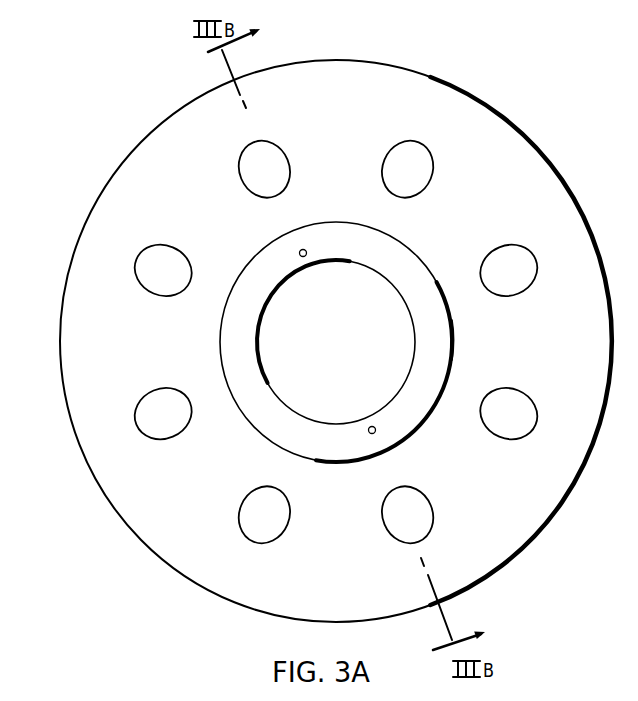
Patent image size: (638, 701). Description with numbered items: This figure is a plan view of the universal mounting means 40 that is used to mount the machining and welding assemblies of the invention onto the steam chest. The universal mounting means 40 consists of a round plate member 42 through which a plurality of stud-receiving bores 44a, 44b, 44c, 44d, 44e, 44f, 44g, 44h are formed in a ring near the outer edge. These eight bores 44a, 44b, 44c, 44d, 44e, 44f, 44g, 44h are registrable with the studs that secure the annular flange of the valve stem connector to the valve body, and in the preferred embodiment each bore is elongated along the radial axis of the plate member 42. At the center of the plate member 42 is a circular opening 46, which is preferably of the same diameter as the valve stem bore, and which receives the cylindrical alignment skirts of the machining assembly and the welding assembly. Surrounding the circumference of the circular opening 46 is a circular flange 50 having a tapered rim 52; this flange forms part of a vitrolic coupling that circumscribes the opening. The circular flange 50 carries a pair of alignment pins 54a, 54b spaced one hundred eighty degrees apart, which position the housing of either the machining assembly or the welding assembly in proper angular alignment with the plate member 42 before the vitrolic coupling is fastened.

The universal mounting means 40 is at (110, 156).
The plate member 42 is at (181, 192).
The stud-receiving bore 44a is at (284, 154).
The stud-receiving bore 44b is at (427, 170).
The stud-receiving bore 44c is at (513, 284).
The stud-receiving bore 44d is at (497, 434).
The stud-receiving bore 44e is at (426, 522).
The stud-receiving bore 44f is at (280, 530).
The stud-receiving bore 44g is at (171, 434).
The stud-receiving bore 44h is at (152, 280).
The circular opening 46 is at (258, 357).
The circular flange 50 is at (405, 263).
The tapered rim 52 is at (452, 338).
The alignment pin 54a is at (301, 249).
The alignment pin 54b is at (375, 433).